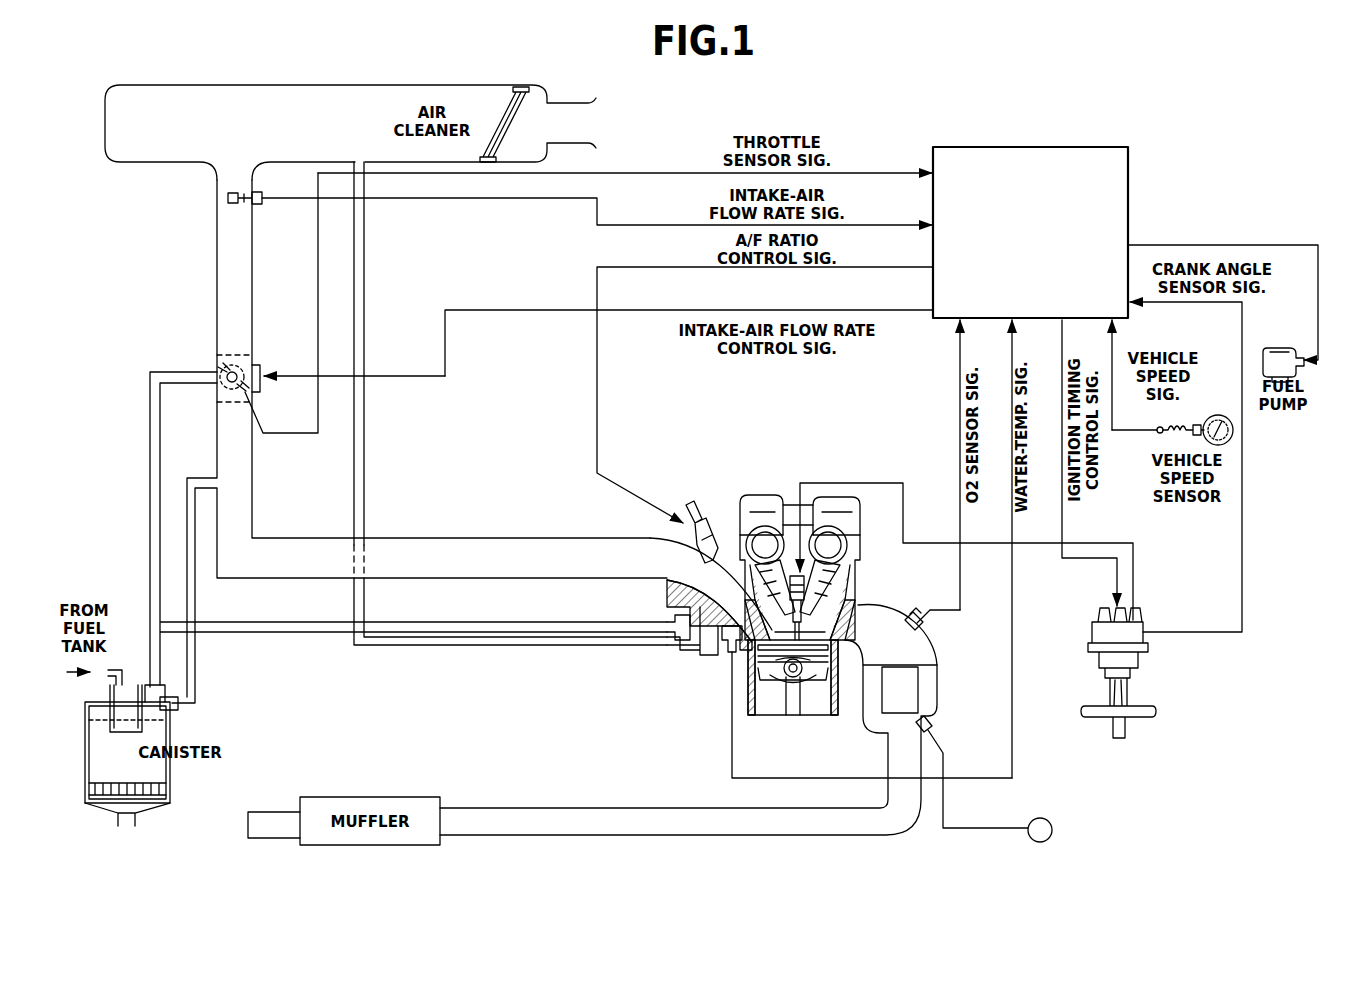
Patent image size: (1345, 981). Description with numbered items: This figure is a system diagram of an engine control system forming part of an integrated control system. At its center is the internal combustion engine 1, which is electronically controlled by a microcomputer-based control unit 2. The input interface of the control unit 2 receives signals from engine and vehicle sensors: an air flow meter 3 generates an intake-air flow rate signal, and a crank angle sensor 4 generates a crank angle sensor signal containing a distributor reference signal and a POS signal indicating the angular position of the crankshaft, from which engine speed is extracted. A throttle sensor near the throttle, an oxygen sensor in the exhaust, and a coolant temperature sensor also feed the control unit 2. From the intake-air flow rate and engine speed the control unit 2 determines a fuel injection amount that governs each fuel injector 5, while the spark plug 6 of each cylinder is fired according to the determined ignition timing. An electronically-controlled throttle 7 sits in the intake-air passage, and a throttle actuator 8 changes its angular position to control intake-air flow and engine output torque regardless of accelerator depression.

The internal combustion engine 1 is at (746, 619).
The control unit 2 is at (1088, 147).
The air flow meter 3 is at (230, 203).
The crank angle sensor 4 is at (1100, 632).
The fuel injector 5 is at (700, 518).
The spark plug 6 is at (805, 605).
The electronically-controlled throttle 7 is at (220, 358).
The throttle actuator 8 is at (250, 357).